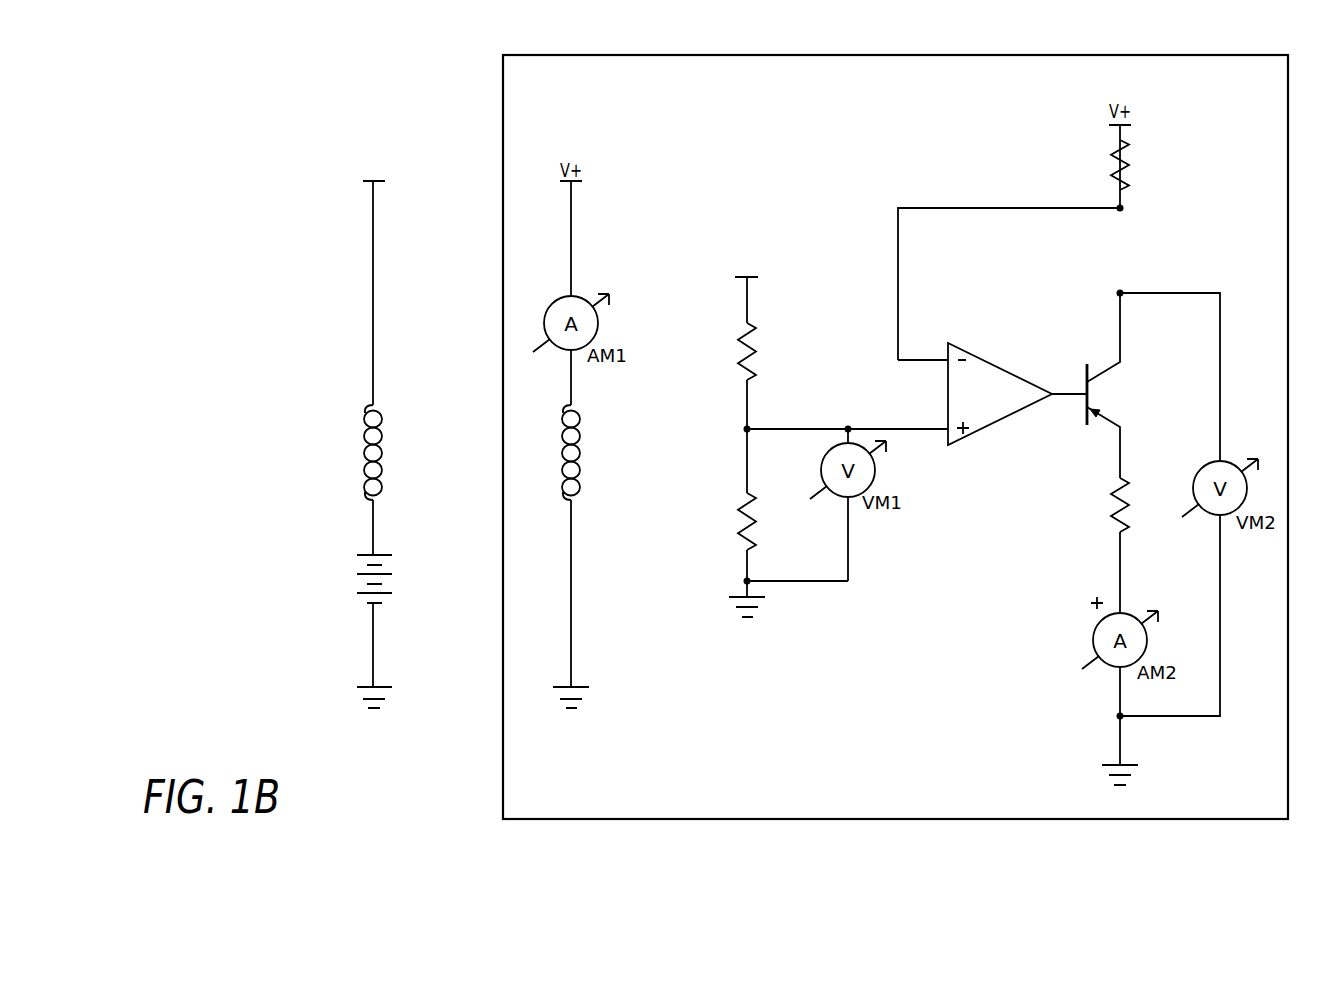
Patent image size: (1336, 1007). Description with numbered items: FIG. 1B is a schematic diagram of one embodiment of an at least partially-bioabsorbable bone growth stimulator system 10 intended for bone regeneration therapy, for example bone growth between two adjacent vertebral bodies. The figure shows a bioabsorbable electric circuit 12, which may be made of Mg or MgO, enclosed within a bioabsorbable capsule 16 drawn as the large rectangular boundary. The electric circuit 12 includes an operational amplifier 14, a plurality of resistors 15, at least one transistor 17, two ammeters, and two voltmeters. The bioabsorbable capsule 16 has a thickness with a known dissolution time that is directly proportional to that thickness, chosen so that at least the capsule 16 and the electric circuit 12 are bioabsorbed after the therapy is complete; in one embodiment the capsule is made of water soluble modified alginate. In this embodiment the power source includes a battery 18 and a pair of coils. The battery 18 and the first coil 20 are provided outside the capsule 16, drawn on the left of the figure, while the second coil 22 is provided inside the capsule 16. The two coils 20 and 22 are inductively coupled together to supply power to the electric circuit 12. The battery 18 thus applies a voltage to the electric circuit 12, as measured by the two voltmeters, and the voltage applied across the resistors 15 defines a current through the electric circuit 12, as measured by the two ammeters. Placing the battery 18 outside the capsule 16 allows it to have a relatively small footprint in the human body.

The bone growth stimulator system 10 is at (265, 122).
The bioabsorbable electric circuit 12 is at (745, 297).
The operational amplifier 14 is at (983, 430).
The resistors 15 is at (745, 348).
The bioabsorbable capsule 16 is at (637, 820).
The transistor 17 is at (1103, 377).
The battery 18 is at (361, 585).
The first coil 20 is at (365, 450).
The second coil 22 is at (580, 440).